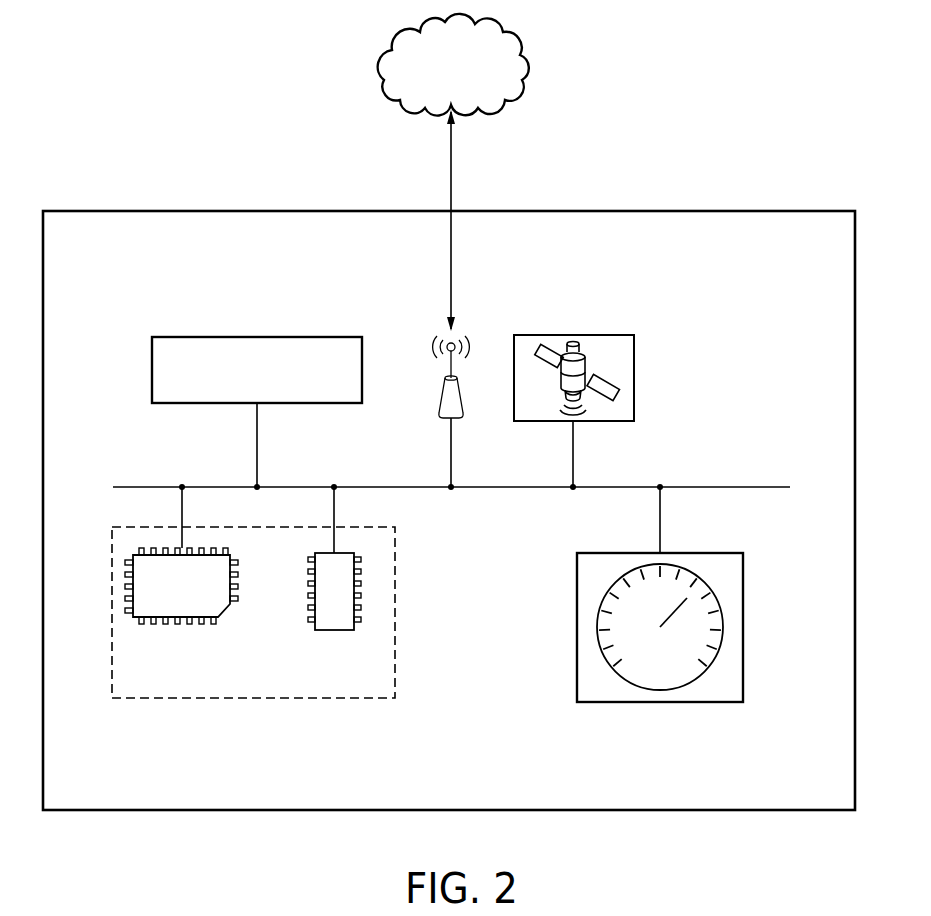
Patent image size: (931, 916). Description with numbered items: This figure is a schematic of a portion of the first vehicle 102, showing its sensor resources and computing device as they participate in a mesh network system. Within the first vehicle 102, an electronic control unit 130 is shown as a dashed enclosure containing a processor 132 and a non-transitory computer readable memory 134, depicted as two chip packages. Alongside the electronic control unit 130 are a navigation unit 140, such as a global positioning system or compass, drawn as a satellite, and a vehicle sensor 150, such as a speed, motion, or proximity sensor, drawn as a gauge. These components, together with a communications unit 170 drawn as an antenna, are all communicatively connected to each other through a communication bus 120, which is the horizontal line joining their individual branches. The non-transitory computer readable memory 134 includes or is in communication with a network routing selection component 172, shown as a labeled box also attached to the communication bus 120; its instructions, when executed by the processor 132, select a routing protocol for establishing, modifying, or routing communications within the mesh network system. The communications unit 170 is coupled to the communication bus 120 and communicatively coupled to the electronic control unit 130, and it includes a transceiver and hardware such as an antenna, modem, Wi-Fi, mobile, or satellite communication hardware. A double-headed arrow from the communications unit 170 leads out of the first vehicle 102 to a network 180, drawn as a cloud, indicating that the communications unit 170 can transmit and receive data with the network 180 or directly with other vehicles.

The first vehicle 102 is at (761, 210).
The communication bus 120 is at (163, 485).
The electronic control unit 130 is at (396, 681).
The processor 132 is at (224, 615).
The non-transitory computer readable memory 134 is at (333, 631).
The navigation unit 140 is at (574, 333).
The vehicle sensor 150 is at (660, 703).
The communications unit 170 is at (442, 381).
The network routing selection component 172 is at (257, 335).
The network 180 is at (380, 60).